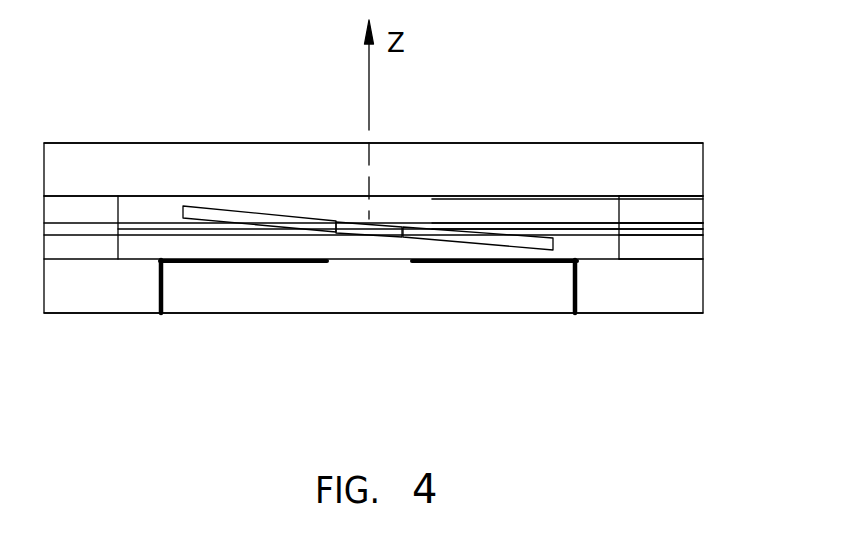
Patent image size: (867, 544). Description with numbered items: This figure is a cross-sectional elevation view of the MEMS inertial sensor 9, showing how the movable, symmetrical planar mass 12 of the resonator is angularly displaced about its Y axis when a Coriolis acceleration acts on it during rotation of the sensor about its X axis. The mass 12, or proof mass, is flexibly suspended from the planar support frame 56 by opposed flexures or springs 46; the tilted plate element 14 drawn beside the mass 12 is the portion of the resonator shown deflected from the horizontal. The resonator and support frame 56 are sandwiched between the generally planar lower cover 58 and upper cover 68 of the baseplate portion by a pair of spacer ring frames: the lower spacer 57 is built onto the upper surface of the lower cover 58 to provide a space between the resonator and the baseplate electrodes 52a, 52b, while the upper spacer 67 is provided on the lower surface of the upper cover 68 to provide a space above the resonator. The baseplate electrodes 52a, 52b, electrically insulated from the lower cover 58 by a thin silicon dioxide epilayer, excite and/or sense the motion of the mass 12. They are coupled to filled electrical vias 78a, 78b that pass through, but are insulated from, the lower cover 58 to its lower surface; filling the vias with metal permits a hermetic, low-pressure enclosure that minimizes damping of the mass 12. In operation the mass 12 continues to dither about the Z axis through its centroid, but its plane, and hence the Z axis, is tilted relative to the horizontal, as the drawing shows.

The MEMS inertial sensor 9 is at (100, 143).
The movable symmetrical planar mass 12 is at (375, 220).
The movable plate 14 is at (212, 208).
The flexures 46 is at (592, 228).
The planar support frame 56 is at (652, 228).
The upper cover portion 68 is at (515, 163).
The upper spacer ring frame 67 is at (687, 215).
The lower ring frame spacer 57 is at (687, 253).
The lower cover portion 58 is at (500, 293).
The baseplate electrode 52a is at (237, 263).
The baseplate electrode 52b is at (430, 263).
The filled electrical via 78a is at (159, 290).
The filled electrical via 78b is at (577, 295).